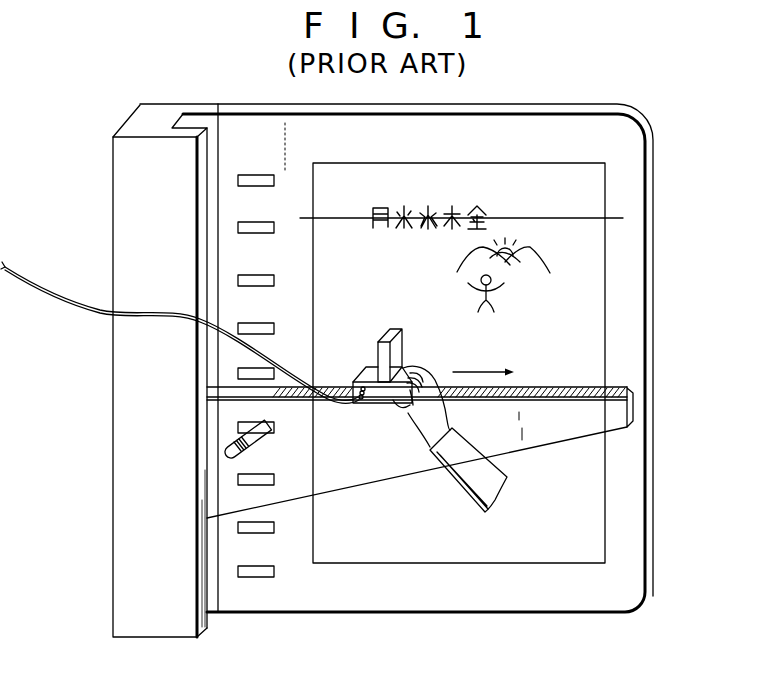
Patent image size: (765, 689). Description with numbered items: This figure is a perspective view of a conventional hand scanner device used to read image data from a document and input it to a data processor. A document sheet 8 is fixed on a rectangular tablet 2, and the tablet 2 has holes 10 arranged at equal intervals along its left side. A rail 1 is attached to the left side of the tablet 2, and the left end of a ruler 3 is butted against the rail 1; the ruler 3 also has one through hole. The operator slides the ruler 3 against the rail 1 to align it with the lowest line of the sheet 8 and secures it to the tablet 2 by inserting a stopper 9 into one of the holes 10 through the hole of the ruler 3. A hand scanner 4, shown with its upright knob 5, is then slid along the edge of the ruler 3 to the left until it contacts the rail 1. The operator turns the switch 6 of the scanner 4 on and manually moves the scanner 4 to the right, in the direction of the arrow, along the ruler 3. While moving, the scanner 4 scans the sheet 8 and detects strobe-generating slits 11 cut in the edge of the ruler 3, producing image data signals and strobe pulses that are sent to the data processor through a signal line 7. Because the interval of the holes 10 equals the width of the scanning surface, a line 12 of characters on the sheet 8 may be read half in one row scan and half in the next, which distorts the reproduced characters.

The rail 1 is at (153, 628).
The tablet 2 is at (585, 600).
The ruler 3 is at (613, 428).
The hand scanner 4 is at (373, 397).
The knob 5 is at (400, 352).
The switch 6 is at (403, 366).
The signal line 7 is at (43, 303).
The document sheet 8 is at (598, 178).
The stopper 9 is at (225, 449).
The holes 10 is at (240, 527).
The strobe-generating slits 11 is at (623, 385).
The line 12 is at (620, 218).